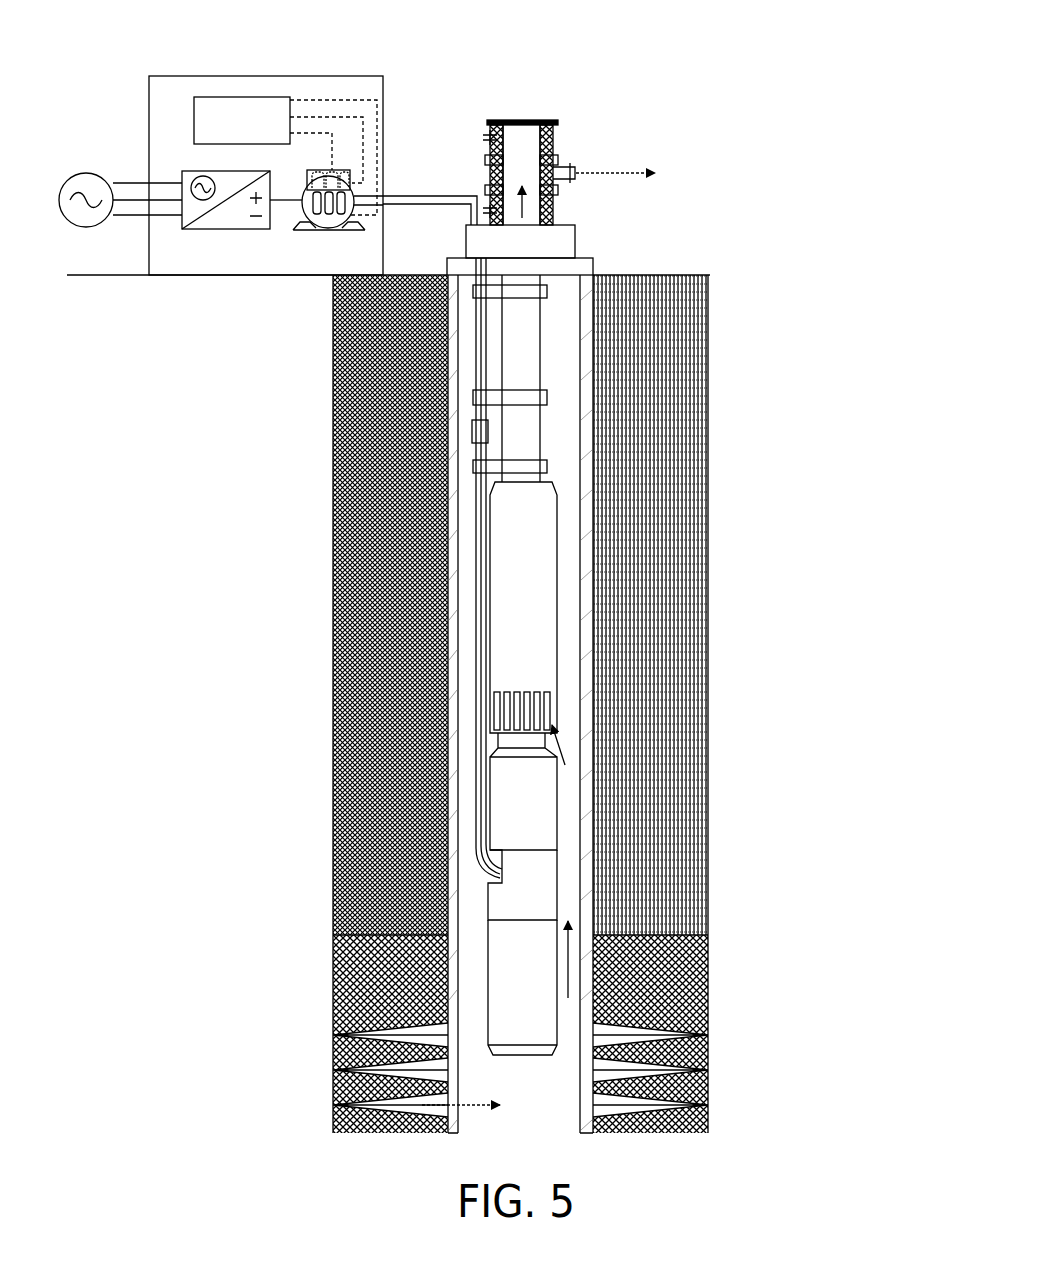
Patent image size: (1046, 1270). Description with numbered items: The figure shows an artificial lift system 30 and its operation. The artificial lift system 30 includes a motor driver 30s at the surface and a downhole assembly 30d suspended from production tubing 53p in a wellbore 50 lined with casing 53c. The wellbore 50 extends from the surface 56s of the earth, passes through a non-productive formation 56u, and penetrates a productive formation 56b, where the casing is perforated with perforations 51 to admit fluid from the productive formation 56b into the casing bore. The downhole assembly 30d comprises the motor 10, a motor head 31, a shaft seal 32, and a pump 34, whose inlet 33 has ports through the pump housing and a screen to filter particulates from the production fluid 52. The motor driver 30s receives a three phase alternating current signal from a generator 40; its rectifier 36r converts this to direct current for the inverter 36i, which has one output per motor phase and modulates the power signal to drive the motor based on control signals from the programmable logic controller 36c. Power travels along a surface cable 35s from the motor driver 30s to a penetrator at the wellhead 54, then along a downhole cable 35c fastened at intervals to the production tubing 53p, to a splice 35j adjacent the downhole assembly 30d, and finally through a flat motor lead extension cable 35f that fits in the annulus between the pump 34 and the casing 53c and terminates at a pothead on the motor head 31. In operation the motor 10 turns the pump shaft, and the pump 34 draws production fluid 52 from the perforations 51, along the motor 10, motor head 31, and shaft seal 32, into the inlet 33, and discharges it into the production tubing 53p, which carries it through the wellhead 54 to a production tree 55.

The motor 10 is at (508, 975).
The artificial lift system 30 is at (193, 514).
The motor driver 30s is at (150, 76).
The downhole assembly 30d is at (836, 684).
The motor head 31 is at (543, 885).
The shaft seal 32 is at (530, 795).
The inlet 33 is at (553, 697).
The pump 34 is at (540, 603).
The downhole cable 35c is at (477, 333).
The motor lead extension cable 35f is at (477, 613).
The splice 35j is at (472, 430).
The surface cable 35s is at (412, 196).
The programmable logic controller 36c is at (243, 97).
The inverter 36i is at (325, 230).
The rectifier 36r is at (217, 229).
The generator 40 is at (86, 173).
The wellbore 50 is at (553, 1117).
The perforations 51 is at (400, 1035).
The production fluid 52 is at (615, 173).
The casing 53c is at (452, 872).
The production tubing 53p is at (541, 353).
The wellhead 54 is at (576, 246).
The production tree 55 is at (515, 122).
The surface 56s is at (92, 277).
The non-productive formation 56u is at (692, 541).
The productive formation 56b is at (692, 996).